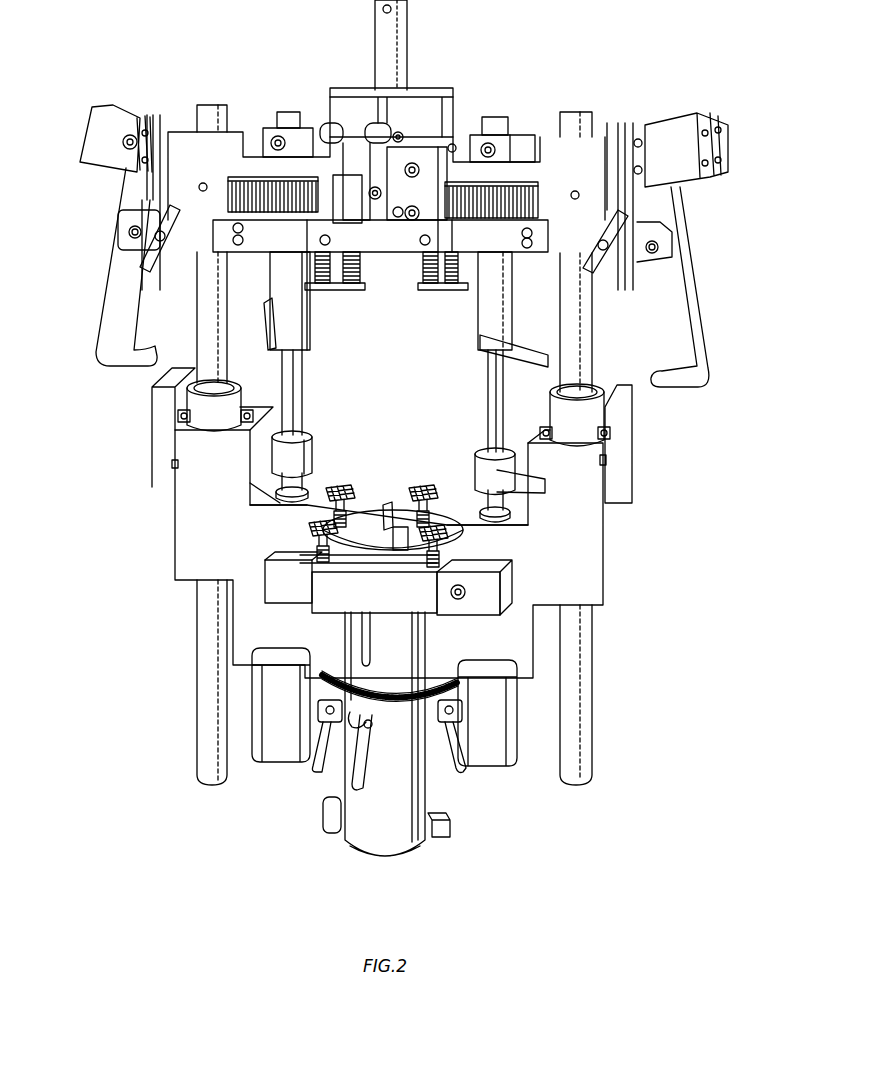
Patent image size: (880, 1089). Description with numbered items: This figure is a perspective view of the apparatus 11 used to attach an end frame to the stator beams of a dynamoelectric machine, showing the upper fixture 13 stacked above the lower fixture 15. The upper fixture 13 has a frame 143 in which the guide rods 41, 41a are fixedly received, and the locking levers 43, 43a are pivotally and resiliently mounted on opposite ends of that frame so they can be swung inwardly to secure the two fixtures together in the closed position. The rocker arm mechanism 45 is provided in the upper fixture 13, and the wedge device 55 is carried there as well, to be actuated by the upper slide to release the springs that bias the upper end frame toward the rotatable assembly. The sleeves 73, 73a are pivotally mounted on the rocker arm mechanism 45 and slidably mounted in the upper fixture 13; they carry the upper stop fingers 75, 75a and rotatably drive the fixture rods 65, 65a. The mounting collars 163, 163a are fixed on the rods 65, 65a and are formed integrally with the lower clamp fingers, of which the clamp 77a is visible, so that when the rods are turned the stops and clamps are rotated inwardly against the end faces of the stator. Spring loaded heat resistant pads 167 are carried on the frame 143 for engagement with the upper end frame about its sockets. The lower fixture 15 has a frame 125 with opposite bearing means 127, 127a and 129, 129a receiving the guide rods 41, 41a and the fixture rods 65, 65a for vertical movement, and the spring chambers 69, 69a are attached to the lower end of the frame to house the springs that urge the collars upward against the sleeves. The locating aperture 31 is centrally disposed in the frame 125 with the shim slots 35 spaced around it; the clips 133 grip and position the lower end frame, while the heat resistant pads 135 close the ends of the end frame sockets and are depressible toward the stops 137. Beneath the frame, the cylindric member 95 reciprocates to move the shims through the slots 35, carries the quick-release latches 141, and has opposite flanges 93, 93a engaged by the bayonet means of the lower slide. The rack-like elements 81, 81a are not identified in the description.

The apparatus 11 is at (620, 87).
The upper assembly fixture 13 is at (699, 200).
The lower assembly fixture 15 is at (631, 551).
The locating aperture 31 is at (354, 564).
The shim slots 35 is at (357, 535).
The guide rod 41 is at (198, 313).
The guide rod 41a is at (590, 326).
The fixture locking lever 43 is at (103, 325).
The fixture locking lever 43a is at (690, 322).
The rocker arm mechanism 45 is at (465, 125).
The wedge device 55 is at (362, 218).
The fixture rod 65 is at (304, 396).
The fixture rod 65a is at (487, 411).
The spring chamber 69 is at (276, 762).
The spring chamber 69a is at (516, 770).
The sleeve 73 is at (310, 325).
The sleeve 73a is at (488, 320).
The upper stop finger 75 is at (268, 308).
The upper stop finger 75a is at (526, 343).
The lower clamp finger 77a is at (528, 480).
The rack gear 81 is at (248, 190).
The rack gear 81a is at (527, 202).
The flange 93 is at (330, 824).
The flange 93a is at (450, 830).
The cylindric shim actuating member 95 is at (430, 793).
The lower fixture frame 125 is at (191, 556).
The guide bearing means 127 is at (186, 402).
The guide bearing means 127a is at (604, 412).
The rod bearing means 129 is at (268, 510).
The rod bearing means 129a is at (512, 518).
The clip 133 is at (401, 550).
The heat resistant pad 135 is at (310, 531).
The stop 137 is at (293, 577).
The latch 141 is at (452, 748).
The upper fixture frame 143 is at (176, 145).
The mounting collar 163 is at (278, 460).
The mounting collar 163a is at (480, 466).
The heat resistant pad 167 is at (423, 284).